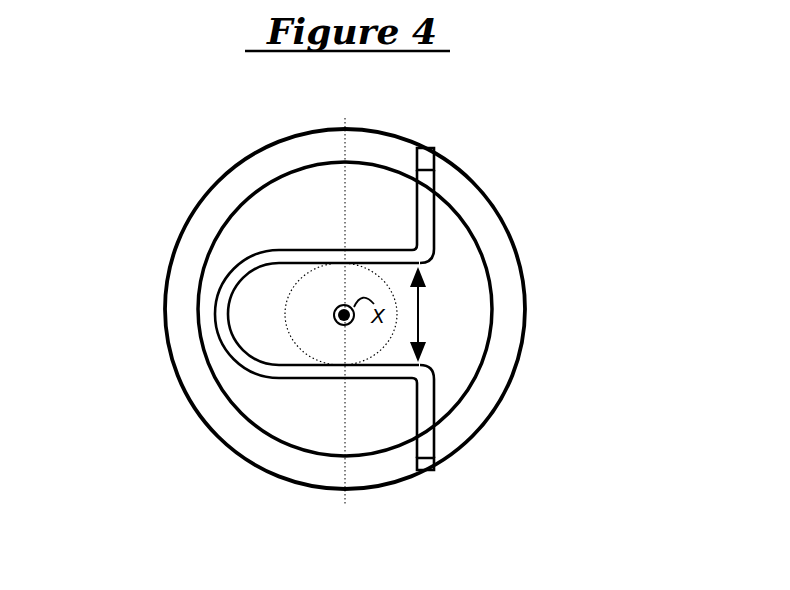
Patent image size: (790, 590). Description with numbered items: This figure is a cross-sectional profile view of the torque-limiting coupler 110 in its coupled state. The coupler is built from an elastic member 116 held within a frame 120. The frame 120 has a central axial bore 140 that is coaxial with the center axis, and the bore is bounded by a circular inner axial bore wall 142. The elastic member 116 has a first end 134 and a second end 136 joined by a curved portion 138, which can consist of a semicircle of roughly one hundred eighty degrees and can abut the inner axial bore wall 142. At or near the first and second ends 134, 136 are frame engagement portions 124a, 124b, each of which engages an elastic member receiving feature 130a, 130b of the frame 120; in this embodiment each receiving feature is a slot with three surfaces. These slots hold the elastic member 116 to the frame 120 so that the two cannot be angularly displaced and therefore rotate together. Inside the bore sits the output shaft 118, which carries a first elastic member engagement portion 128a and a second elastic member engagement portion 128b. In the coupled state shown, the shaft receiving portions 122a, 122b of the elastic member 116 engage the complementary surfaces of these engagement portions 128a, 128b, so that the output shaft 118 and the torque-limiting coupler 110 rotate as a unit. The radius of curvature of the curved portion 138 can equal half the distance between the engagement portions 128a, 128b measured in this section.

The torque-limiting coupler 110 is at (590, 76).
The elastic member 116 is at (427, 375).
The output shaft 118 is at (310, 307).
The frame 120 is at (190, 260).
The shaft receiving portion 122a is at (357, 372).
The shaft receiving portion 122b is at (330, 258).
The frame engagement portion 124a is at (418, 442).
The frame engagement portion 124b is at (422, 182).
The elastic member engagement portion 128a is at (340, 363).
The elastic member engagement portion 128b is at (347, 265).
The elastic member receiving feature 130a is at (425, 462).
The elastic member receiving feature 130b is at (428, 153).
The first end 134 is at (422, 403).
The second end 136 is at (428, 210).
The curved portion 138 is at (210, 305).
The central axial bore 140 is at (338, 175).
The inner axial bore wall 142 is at (378, 158).